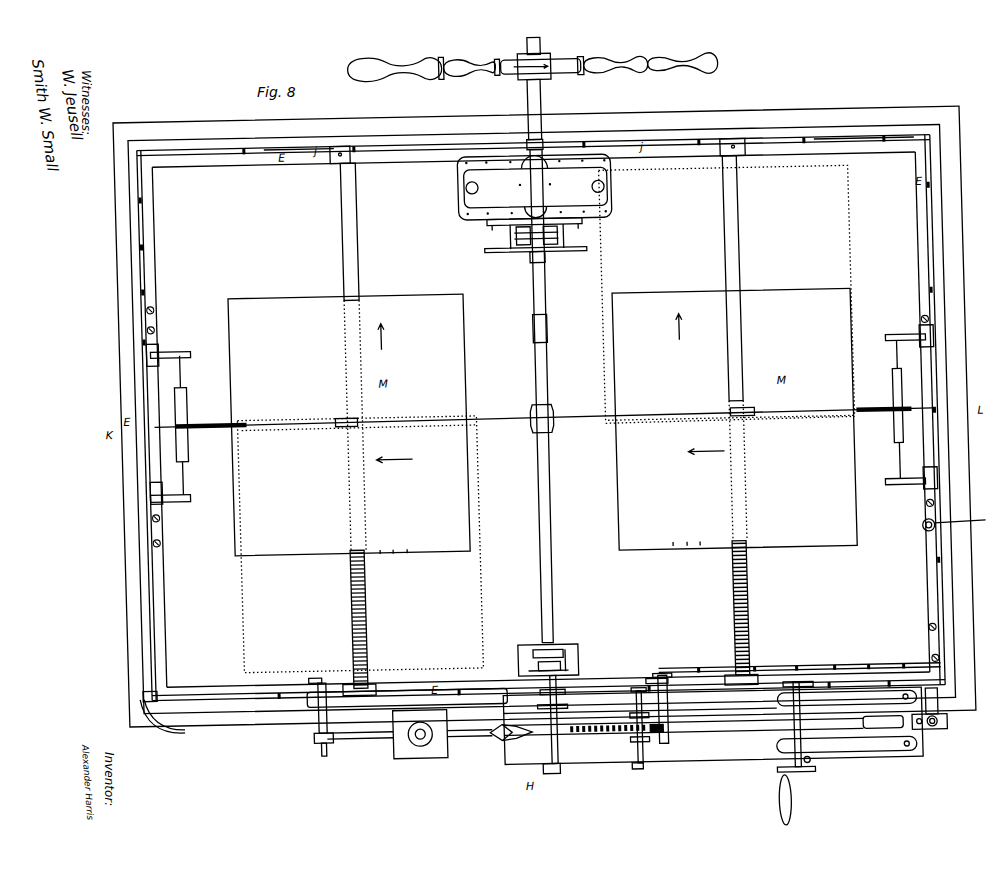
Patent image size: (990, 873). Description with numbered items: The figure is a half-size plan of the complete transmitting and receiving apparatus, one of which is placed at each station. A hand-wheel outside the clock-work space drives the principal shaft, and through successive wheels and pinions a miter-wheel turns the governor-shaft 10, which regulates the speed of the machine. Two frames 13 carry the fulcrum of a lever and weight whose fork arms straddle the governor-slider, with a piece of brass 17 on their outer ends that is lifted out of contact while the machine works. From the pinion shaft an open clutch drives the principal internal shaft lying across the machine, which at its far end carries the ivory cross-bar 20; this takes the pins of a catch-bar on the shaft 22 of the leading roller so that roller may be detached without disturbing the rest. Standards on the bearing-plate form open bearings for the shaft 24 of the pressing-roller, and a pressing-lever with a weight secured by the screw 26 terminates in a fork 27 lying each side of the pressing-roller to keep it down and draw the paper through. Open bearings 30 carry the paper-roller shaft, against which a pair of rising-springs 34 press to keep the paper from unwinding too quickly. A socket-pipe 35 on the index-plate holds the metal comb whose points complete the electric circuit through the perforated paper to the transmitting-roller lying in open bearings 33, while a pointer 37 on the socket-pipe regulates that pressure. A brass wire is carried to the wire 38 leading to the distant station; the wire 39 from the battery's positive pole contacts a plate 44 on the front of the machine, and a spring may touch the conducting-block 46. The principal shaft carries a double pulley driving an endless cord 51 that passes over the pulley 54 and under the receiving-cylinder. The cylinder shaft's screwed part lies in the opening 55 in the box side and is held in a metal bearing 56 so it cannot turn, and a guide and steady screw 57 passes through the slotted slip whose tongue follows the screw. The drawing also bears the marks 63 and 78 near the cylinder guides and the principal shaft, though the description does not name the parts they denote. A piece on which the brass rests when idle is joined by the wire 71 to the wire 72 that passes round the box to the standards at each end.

The wire 72 is at (554, 417).
The opening 55 is at (545, 431).
The metal bearing 56 is at (532, 159).
The wire 71 is at (588, 136).
The piece of brass 17 is at (533, 92).
The shaft block 78 is at (567, 395).
The governor-shaft 10 is at (540, 181).
The frames 13 is at (546, 239).
The endless cord or band 51 is at (543, 418).
The pulley 54 is at (542, 414).
The rod guide 63 is at (573, 420).
The wire 38 is at (949, 551).
The conducting-block 46 is at (944, 708).
The wire 39 is at (158, 712).
The guide and steady screw 57 is at (546, 556).
The shaft 24 is at (321, 717).
The plate 44 is at (408, 721).
The screw 26 is at (420, 734).
The pointer 37 is at (793, 671).
The fork 27 is at (705, 726).
The cross-bar 20 is at (548, 653).
The shaft 22 is at (554, 727).
The open bearings 33 is at (636, 734).
The socket-pipe 35 is at (670, 708).
The rising-springs 34 is at (846, 721).
The open bearings 30 is at (792, 748).